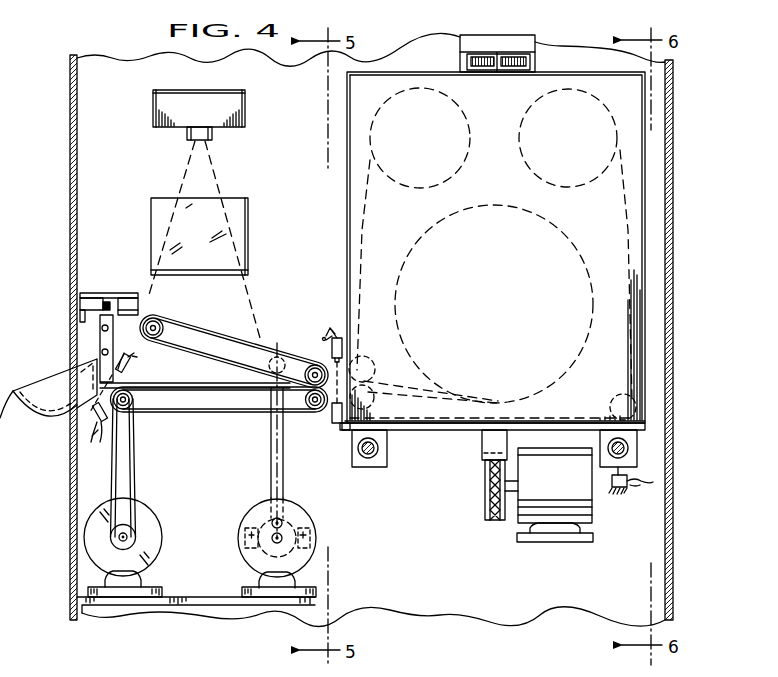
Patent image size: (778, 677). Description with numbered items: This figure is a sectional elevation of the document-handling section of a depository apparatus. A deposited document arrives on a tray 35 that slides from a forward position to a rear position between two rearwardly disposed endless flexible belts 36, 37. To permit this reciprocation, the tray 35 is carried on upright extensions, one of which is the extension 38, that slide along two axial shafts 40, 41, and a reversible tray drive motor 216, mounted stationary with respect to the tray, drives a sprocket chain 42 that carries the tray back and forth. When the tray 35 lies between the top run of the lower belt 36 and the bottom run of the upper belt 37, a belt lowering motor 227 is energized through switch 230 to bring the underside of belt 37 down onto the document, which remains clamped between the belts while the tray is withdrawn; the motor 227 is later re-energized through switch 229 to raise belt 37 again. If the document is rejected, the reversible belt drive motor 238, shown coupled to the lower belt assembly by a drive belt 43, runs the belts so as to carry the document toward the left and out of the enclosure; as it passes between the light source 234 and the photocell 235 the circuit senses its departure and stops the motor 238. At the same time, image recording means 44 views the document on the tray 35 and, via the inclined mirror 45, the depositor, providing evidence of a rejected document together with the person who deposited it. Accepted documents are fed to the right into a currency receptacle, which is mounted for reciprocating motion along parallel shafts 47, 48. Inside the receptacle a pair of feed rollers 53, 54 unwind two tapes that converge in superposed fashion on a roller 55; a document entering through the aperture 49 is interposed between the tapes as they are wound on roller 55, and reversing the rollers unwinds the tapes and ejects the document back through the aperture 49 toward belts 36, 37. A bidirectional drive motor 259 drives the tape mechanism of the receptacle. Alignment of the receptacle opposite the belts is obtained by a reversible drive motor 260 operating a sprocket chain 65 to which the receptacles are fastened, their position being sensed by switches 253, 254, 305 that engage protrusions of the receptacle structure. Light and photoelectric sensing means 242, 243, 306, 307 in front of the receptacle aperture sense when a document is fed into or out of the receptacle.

The image recording means 44 is at (247, 95).
The inclined mirror 45 is at (249, 228).
The reversible drive motor 216 is at (131, 292).
The axial shaft 41 is at (102, 328).
The upright extension 38 is at (100, 340).
The axial shaft 40 is at (100, 352).
The photocell 235 is at (130, 361).
The light source 234 is at (78, 432).
The endless flexible belt 37 is at (227, 337).
The tray 35 is at (221, 384).
The endless flexible belt 36 is at (192, 414).
The light and photoelectric sensing means 307 is at (318, 301).
The light and photoelectric sensing means 243 is at (336, 338).
The light and photoelectric sensing means 242 is at (332, 423).
The light and photoelectric sensing means 306 is at (318, 459).
The sprocket chain 42 is at (271, 468).
The drive belt 43 is at (137, 490).
The reversible belt drive motor 238 is at (92, 537).
The belt lowering motor 227 is at (300, 514).
The switch 229 is at (245, 538).
The switch 230 is at (310, 538).
The bidirectional drive motor 259 is at (537, 39).
The feed roller 53 is at (433, 142).
The feed roller 54 is at (581, 142).
The roller 55 is at (505, 300).
The aperture 49 is at (352, 366).
The parallel shaft 47 is at (380, 449).
The parallel shaft 48 is at (632, 449).
The switch 253 is at (612, 489).
The switch 254 is at (634, 532).
The switch 305 is at (634, 550).
The sprocket chain 65 is at (493, 522).
The reversible drive motor 260 is at (568, 494).